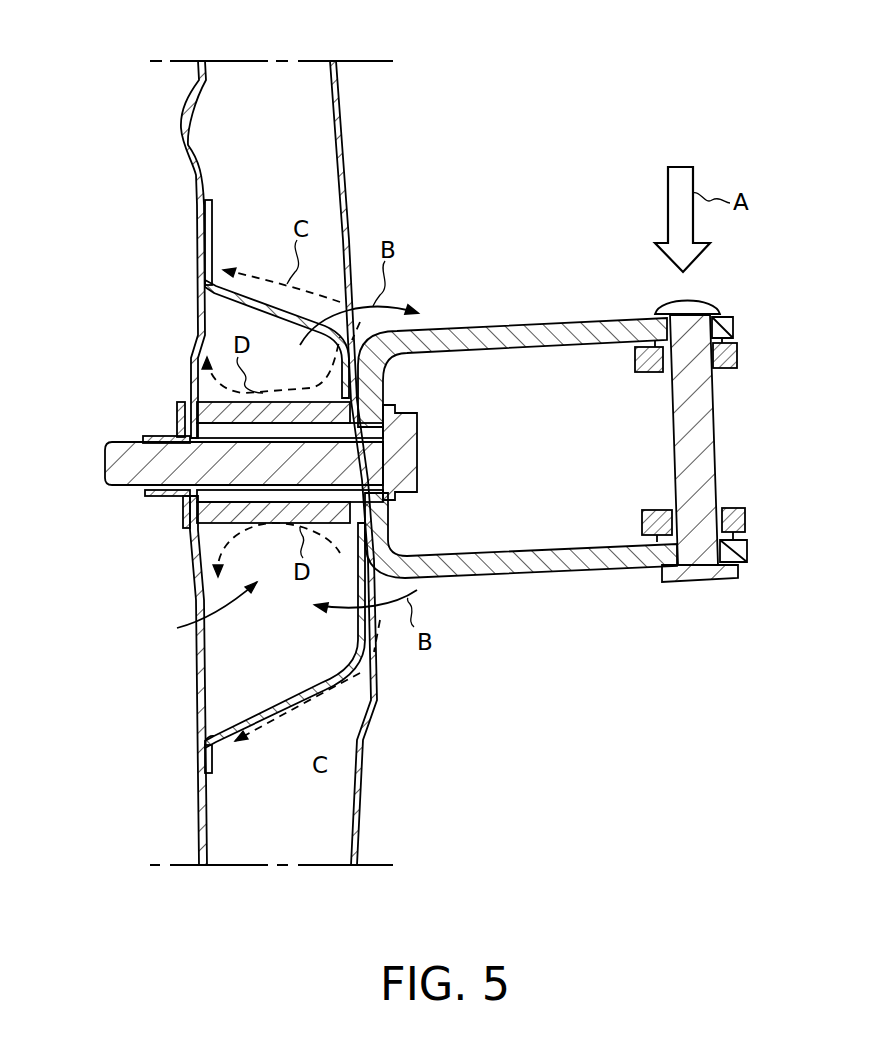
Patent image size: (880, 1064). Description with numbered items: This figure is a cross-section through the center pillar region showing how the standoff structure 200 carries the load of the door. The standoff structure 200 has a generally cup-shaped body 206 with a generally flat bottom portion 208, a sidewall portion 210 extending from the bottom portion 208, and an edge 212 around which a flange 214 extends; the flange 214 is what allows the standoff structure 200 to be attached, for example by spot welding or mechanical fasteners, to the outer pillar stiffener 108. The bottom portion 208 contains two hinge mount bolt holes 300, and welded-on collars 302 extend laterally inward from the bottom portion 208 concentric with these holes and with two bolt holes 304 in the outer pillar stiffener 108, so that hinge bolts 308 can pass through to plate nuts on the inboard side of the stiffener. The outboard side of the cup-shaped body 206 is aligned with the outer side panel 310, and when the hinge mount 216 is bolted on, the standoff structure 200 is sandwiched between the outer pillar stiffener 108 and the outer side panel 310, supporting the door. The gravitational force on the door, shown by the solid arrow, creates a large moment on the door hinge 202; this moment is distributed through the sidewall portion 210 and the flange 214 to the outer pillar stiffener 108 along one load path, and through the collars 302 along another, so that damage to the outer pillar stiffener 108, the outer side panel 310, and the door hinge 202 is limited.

The outer pillar stiffener 108 is at (202, 827).
The standoff structure 200 is at (266, 199).
The door hinge 202 is at (705, 427).
The cup-shaped body 206 is at (195, 612).
The bottom portion 208 is at (322, 385).
The sidewall portion 210 is at (265, 705).
The edge 212 is at (206, 723).
The flange 214 is at (207, 767).
The hinge mount 216 is at (472, 572).
The hinge mount bolt holes 300 is at (363, 427).
The collars 302 is at (207, 403).
The bolt holes 304 is at (175, 450).
The hinge bolts 308 is at (137, 465).
The outer side panel 310 is at (357, 807).